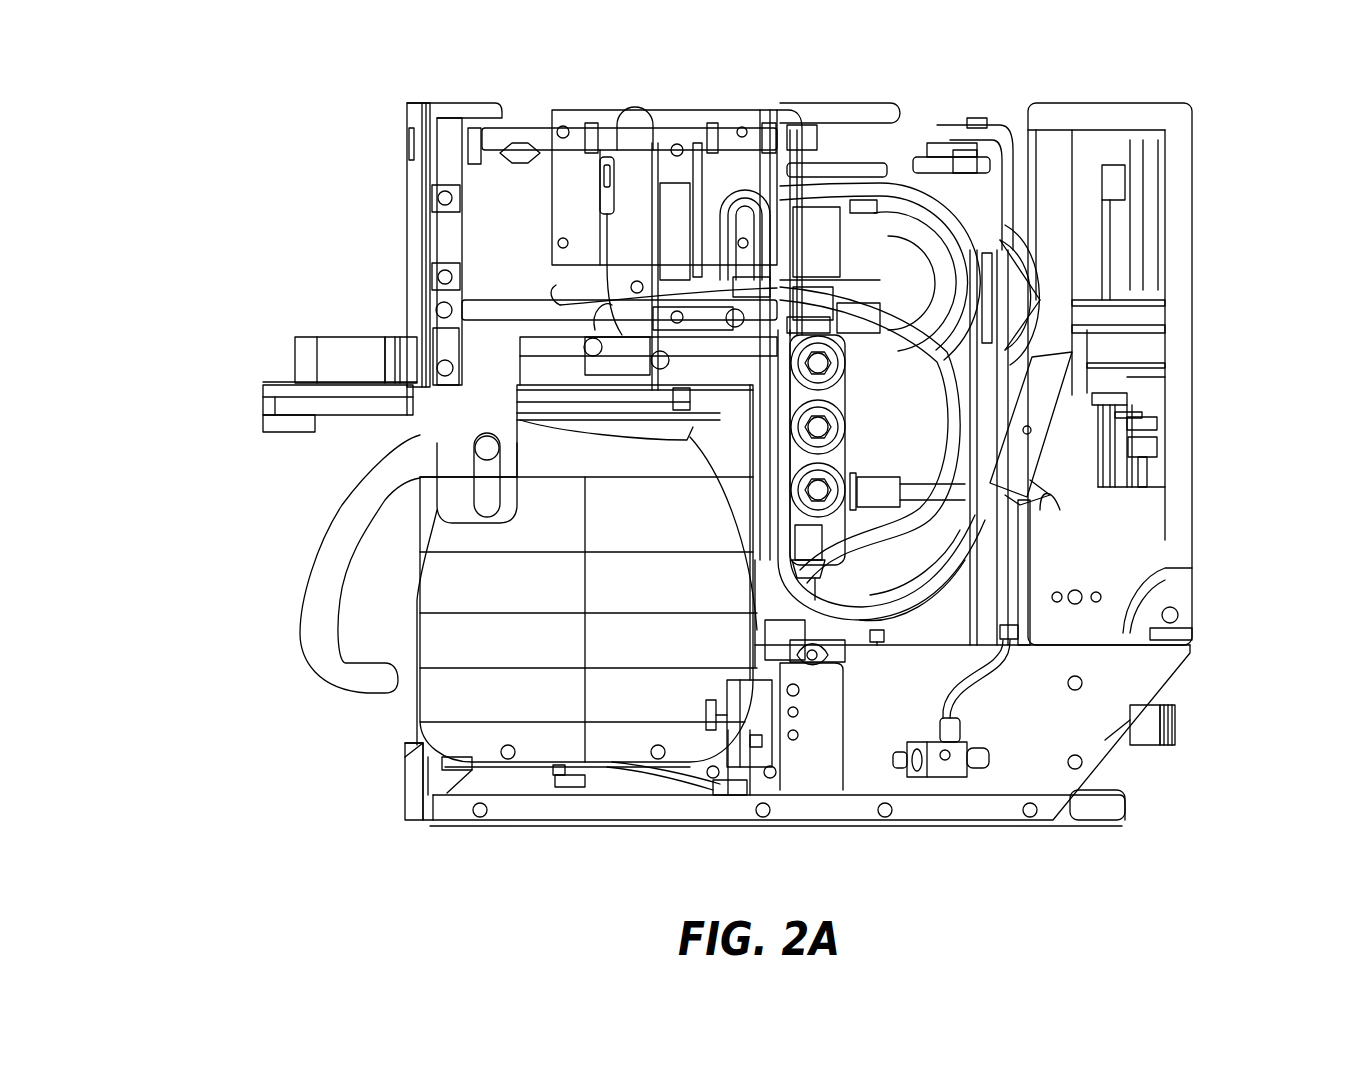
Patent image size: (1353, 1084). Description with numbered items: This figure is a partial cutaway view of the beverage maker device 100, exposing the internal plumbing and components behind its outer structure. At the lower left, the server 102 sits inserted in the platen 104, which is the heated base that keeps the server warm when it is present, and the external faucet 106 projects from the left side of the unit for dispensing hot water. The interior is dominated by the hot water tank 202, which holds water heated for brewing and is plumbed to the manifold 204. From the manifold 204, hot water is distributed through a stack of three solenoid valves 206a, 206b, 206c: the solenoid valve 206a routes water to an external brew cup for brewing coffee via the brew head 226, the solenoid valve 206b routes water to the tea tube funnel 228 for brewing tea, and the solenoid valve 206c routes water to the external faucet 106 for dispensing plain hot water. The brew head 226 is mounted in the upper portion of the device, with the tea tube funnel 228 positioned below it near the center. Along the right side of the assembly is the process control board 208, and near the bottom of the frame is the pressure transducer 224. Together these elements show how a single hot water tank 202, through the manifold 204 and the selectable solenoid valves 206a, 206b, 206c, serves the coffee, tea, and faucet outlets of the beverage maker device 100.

The beverage maker device 100 is at (160, 128).
The server 102 is at (525, 650).
The platen 104 is at (515, 777).
The external faucet 106 is at (265, 405).
The hot water tank 202 is at (882, 262).
The manifold 204 is at (835, 390).
The solenoid valve 206a is at (840, 353).
The solenoid valve 206b is at (835, 485).
The solenoid valve 206c is at (838, 427).
The process control board 208 is at (1185, 340).
The pressure transducer 224 is at (938, 777).
The brew head 226 is at (558, 227).
The tea tube funnel 228 is at (627, 357).